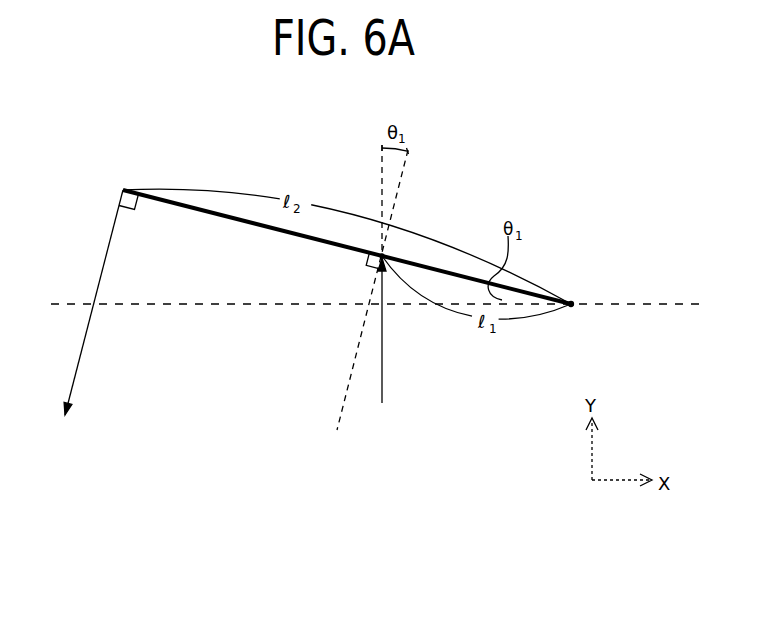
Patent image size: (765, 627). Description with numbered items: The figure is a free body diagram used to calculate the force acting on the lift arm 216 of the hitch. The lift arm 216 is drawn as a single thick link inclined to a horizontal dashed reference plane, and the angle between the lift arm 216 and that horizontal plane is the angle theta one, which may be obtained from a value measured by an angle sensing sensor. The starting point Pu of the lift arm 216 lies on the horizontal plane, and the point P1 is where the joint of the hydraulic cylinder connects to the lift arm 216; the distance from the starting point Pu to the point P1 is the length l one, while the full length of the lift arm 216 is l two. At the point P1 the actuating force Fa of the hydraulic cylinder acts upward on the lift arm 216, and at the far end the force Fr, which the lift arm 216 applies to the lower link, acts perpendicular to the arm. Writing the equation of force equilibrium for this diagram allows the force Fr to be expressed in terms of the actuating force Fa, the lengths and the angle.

The lift arm 216 is at (197, 208).
The point at which a joint of the hydraulic cylinder is connected to the lift arm P1 is at (371, 249).
The starting point of the lift arm Pu is at (578, 321).
The actuating force of the hydraulic cylinder Fa is at (384, 345).
The force applied from the lift arm to the lower link Fr is at (89, 321).